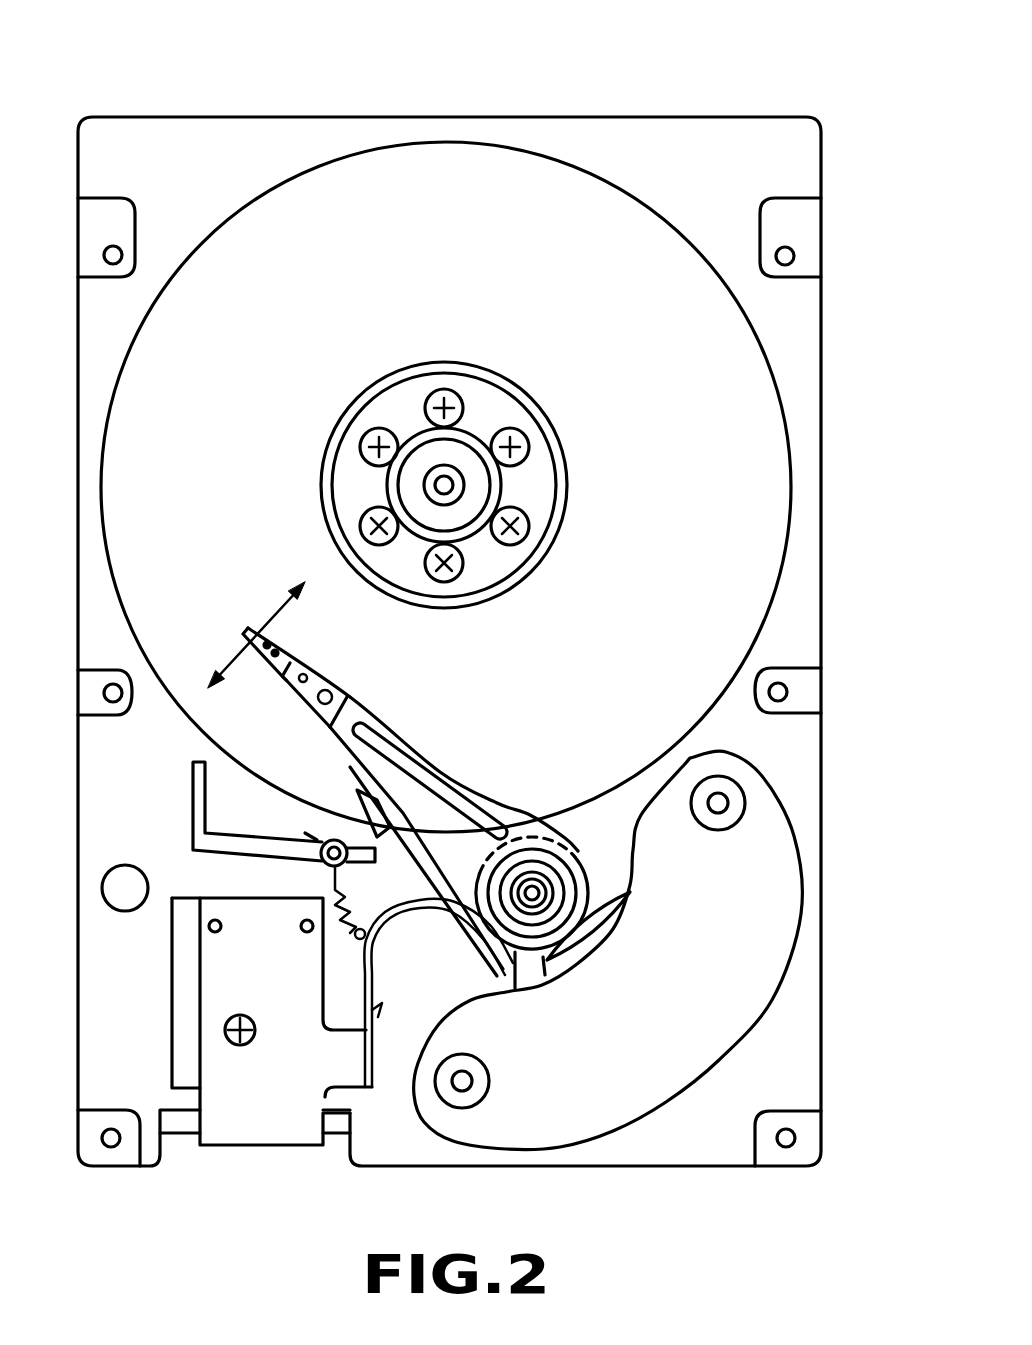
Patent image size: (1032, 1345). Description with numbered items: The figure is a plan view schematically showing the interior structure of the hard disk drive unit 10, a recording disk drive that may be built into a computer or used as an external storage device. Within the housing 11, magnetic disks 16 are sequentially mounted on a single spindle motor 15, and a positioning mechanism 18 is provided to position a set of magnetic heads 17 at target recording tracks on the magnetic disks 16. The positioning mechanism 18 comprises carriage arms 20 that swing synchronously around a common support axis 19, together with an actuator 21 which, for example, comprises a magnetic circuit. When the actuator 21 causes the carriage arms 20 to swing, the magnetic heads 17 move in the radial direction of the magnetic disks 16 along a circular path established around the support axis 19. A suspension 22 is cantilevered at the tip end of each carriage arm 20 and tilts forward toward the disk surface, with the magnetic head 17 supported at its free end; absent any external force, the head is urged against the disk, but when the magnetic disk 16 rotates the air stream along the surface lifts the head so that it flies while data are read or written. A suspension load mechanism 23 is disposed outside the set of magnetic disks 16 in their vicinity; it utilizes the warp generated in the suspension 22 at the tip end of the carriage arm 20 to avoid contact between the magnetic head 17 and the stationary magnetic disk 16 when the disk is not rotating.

The hard disk drive unit 10 is at (444, 91).
The housing 11 is at (821, 552).
The spindle motor 15 is at (485, 483).
The magnetic disks 16 is at (667, 221).
The magnetic heads 17 is at (250, 627).
The positioning mechanism 18 is at (588, 743).
The support axis 19 is at (545, 862).
The carriage arms 20 is at (467, 778).
The actuator 21 is at (688, 1010).
The suspension 22 is at (290, 656).
The suspension load mechanism 23 is at (190, 748).